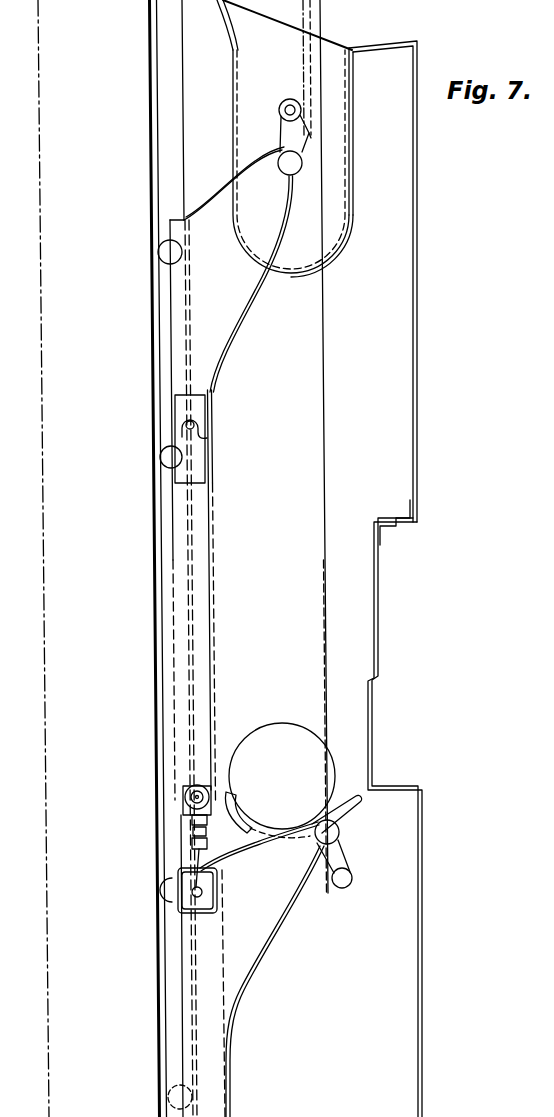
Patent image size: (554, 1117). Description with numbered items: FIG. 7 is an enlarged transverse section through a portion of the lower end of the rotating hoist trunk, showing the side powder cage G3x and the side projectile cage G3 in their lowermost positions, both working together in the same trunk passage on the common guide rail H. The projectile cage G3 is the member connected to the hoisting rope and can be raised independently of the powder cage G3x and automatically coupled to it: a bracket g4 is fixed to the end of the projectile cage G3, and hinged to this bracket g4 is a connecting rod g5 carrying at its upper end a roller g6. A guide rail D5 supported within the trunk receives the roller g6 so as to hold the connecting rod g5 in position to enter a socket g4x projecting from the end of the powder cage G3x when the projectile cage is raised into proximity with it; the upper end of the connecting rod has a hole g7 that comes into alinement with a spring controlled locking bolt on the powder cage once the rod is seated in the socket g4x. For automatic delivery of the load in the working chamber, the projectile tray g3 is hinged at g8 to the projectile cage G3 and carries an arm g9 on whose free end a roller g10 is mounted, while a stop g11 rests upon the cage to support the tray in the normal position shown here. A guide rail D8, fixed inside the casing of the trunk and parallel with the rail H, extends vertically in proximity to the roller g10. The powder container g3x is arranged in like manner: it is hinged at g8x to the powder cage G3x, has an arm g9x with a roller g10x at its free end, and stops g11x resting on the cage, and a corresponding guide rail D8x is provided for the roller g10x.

The guide rail H is at (160, 195).
The guide rail D8x is at (312, 25).
The powder container g3x is at (342, 228).
The roller g10x is at (298, 108).
The arm g9x is at (295, 145).
The hinge g8x is at (301, 164).
The stop g11x is at (234, 183).
The side powder cage G3x is at (247, 488).
The socket g4x is at (203, 418).
The hole g7 is at (212, 434).
The guide rail D5 is at (213, 626).
The guide rail D8 is at (327, 660).
The projectile tray g3 is at (228, 806).
The hinge g8 is at (339, 832).
The arm g9 is at (343, 860).
The roller g10 is at (343, 888).
The stop g11 is at (246, 836).
The roller g6 is at (186, 804).
The connecting rod g5 is at (193, 846).
The bracket g4 is at (186, 909).
The side projectile cage G3 is at (275, 981).